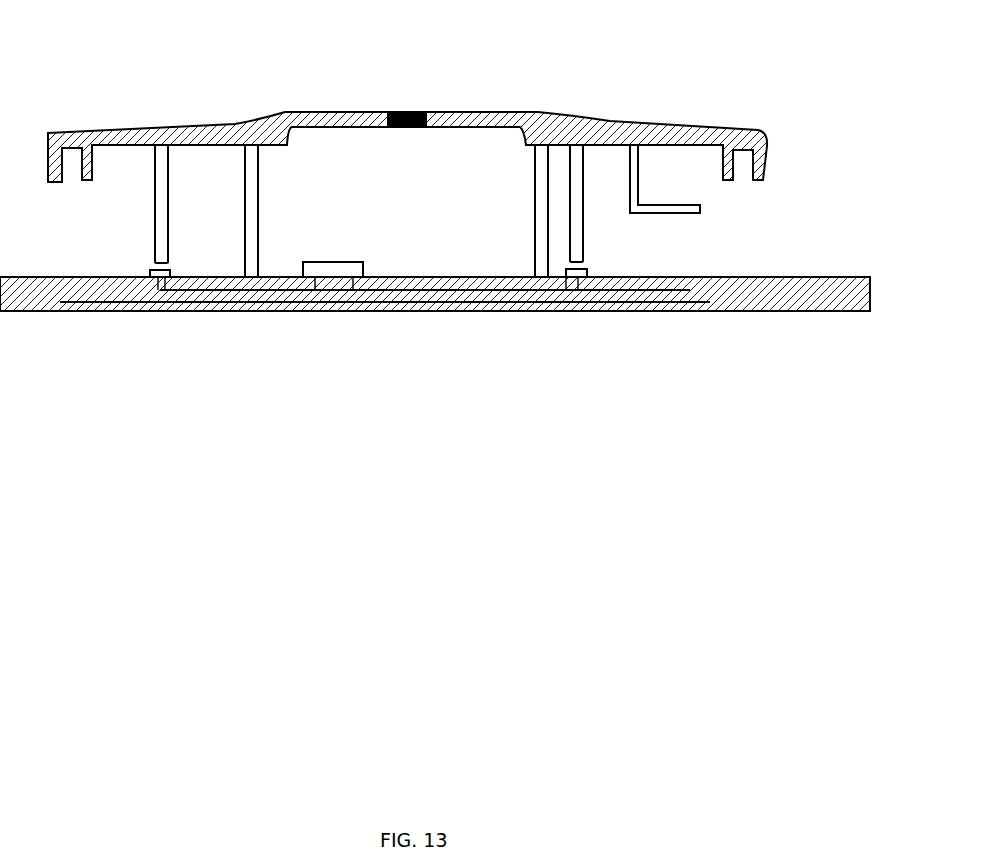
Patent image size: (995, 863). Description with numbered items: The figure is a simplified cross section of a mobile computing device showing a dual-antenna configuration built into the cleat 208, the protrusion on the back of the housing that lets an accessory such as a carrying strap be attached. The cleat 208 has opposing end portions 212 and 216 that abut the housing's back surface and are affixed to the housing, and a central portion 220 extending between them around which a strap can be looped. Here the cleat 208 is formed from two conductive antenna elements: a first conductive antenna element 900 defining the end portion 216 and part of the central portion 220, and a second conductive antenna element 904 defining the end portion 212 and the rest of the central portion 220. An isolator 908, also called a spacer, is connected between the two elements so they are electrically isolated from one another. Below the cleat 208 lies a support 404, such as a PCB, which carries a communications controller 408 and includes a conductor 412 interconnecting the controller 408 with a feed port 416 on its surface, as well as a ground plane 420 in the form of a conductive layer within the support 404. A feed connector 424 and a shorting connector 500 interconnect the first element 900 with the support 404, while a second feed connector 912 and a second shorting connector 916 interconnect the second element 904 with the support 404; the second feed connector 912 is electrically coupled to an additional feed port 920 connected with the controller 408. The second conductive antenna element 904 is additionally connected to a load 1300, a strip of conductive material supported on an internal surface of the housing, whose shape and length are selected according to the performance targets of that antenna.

The cleat 208 is at (771, 139).
The end portion 212 is at (713, 121).
The end portion 216 is at (115, 121).
The central portion 220 is at (345, 112).
The first conductive antenna element 900 is at (231, 117).
The second conductive antenna element 904 is at (591, 117).
The isolator 908 is at (413, 112).
The feed connector 424 is at (155, 205).
The shorting connector 500 is at (258, 197).
The second shorting connector 916 is at (535, 190).
The second feed connector 912 is at (583, 230).
The load 1300 is at (700, 209).
The support 404 is at (208, 312).
The communications controller 408 is at (363, 268).
The conductor 412 is at (288, 291).
The feed port 416 is at (158, 284).
The ground plane 420 is at (493, 302).
The additional feed port 920 is at (580, 285).